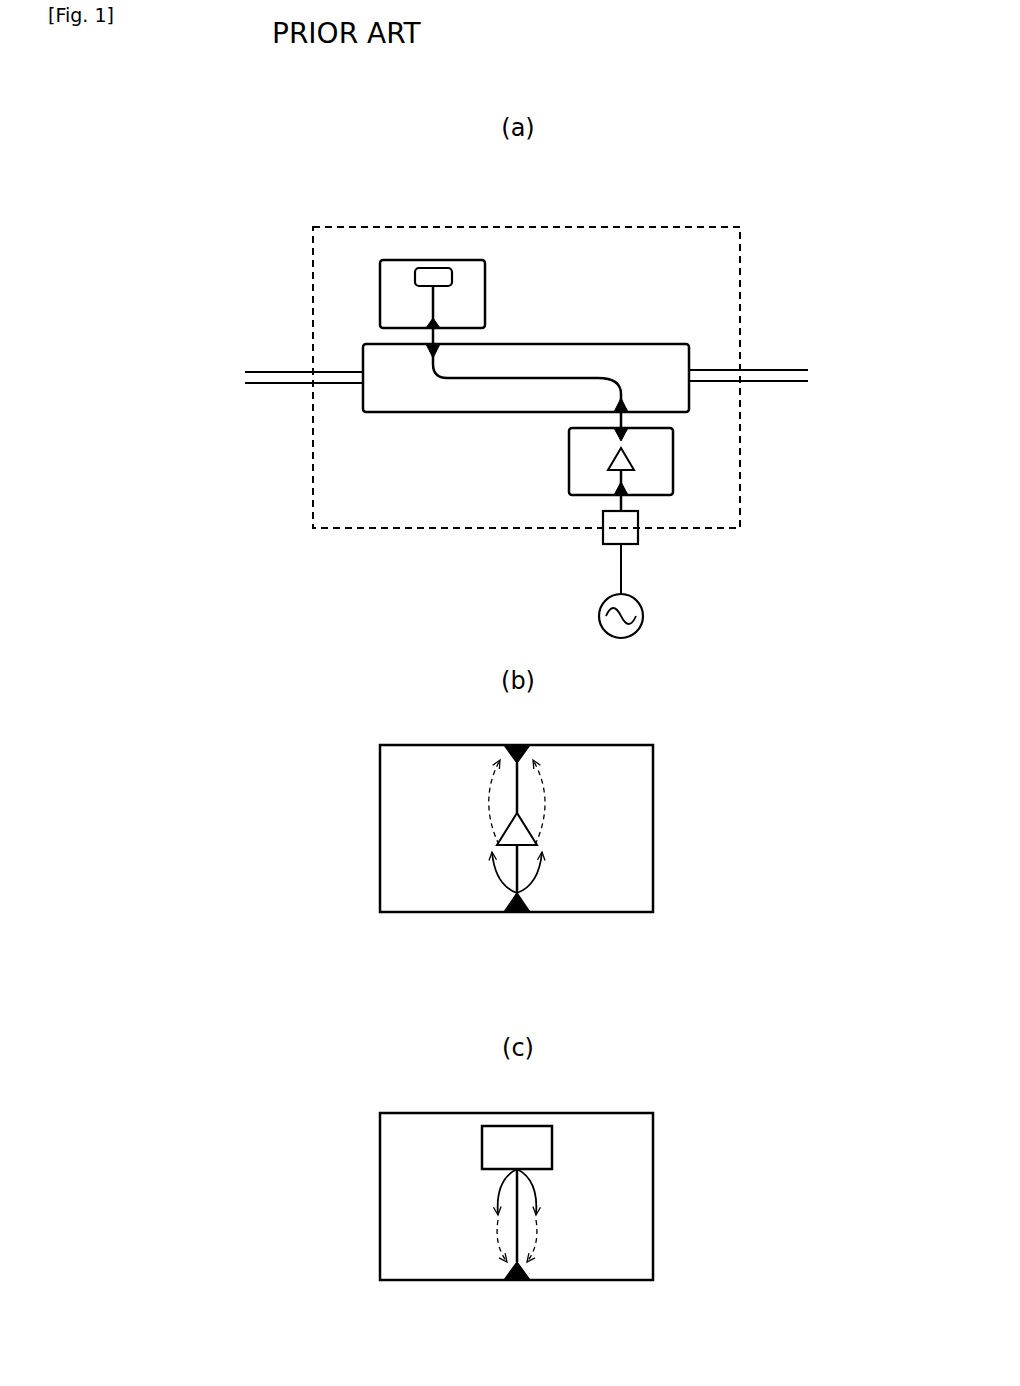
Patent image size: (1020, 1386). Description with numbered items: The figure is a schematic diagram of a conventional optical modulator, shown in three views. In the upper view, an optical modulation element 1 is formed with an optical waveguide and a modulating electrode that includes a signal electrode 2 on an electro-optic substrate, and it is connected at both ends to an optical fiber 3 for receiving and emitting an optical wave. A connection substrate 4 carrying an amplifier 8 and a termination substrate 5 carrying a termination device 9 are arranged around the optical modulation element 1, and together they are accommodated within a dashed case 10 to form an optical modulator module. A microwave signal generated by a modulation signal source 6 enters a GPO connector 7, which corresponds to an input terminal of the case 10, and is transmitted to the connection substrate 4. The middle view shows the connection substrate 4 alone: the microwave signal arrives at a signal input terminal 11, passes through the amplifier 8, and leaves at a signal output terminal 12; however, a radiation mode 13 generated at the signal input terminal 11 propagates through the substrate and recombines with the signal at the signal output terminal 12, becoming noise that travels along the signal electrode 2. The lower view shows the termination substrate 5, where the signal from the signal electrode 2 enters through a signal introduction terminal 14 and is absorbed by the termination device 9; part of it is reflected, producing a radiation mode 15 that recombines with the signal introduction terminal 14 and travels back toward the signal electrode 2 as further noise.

The optical modulation element 1 is at (637, 343).
The signal electrode 2 is at (483, 378).
The optical fiber 3 is at (297, 386).
The connection substrate 4 is at (677, 463).
The termination substrate 5 is at (495, 297).
The modulation signal source 6 is at (643, 616).
The GPO connector 7 is at (622, 528).
The amplifier 8 is at (608, 462).
The termination device 9 is at (433, 268).
The case 10 is at (312, 496).
The signal input terminal 11 is at (520, 912).
The signal output terminal 12 is at (528, 745).
The radiation mode 13 is at (497, 882).
The signal introduction terminal 14 is at (525, 1280).
The radiation mode 15 is at (497, 1193).